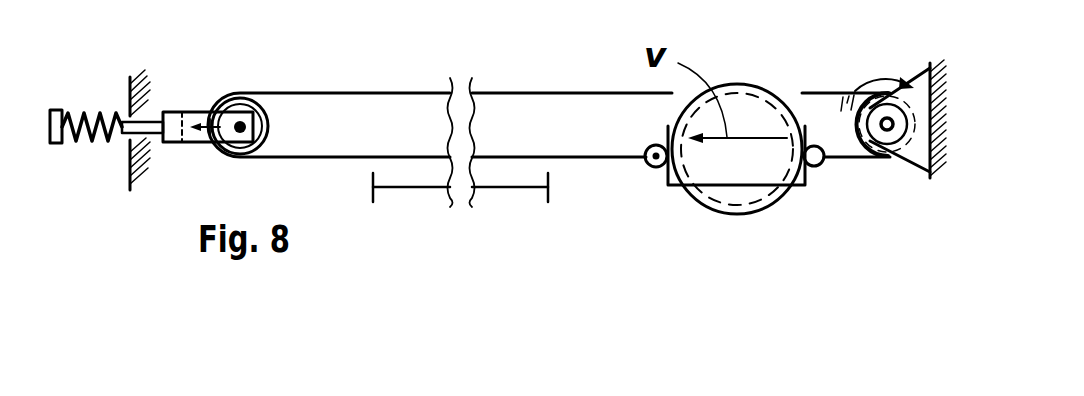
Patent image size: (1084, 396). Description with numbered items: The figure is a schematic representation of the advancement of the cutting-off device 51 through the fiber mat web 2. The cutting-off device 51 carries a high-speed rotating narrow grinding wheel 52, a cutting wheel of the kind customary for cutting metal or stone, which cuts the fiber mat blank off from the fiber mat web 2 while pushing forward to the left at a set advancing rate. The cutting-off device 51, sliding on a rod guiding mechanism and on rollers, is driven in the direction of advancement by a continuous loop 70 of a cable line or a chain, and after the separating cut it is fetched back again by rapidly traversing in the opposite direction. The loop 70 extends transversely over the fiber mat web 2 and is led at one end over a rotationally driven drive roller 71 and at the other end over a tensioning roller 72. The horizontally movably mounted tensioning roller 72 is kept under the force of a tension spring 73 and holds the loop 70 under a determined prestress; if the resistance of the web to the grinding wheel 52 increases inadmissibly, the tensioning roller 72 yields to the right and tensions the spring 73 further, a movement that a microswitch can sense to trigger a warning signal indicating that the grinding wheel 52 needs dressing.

The fiber mat web 2 is at (425, 187).
The cutting-off device 51 is at (737, 84).
The grinding wheel 52 is at (758, 209).
The continuous loop 70 is at (353, 157).
The drive roller 71 is at (856, 150).
The tensioning roller 72 is at (268, 121).
The tension spring 73 is at (107, 143).